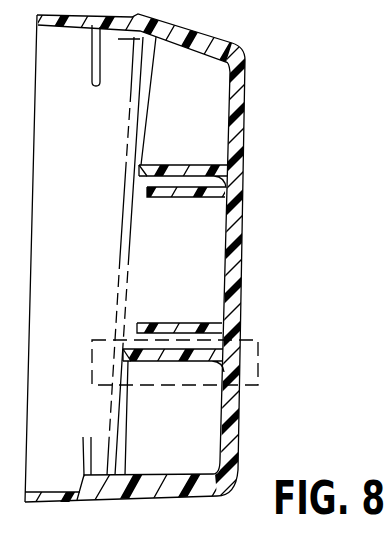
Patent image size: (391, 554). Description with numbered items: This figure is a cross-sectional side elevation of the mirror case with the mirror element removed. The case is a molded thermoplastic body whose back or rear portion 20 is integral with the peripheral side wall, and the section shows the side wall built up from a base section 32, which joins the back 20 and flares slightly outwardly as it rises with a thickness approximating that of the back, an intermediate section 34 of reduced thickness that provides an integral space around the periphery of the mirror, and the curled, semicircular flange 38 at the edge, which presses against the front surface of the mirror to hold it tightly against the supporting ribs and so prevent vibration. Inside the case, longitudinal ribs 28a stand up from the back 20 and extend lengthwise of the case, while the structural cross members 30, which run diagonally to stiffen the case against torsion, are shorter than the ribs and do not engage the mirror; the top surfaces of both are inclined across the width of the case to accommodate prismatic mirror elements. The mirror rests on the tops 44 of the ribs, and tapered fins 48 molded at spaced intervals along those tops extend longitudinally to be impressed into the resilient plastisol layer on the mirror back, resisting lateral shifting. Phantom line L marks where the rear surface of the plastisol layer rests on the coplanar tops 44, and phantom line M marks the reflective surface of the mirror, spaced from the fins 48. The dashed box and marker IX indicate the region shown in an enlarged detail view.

The back or rear portion 20 is at (243, 122).
The structural cross members 30 is at (204, 108).
The longitudinal ribs 28a is at (197, 165).
The tops of supporting ribs 44 is at (139, 166).
The tapered fins 48 is at (138, 168).
The phantom line M is at (123, 233).
The phantom line L is at (133, 247).
The section indicator IX is at (254, 341).
The curled, semicircular flange 38 is at (83, 503).
The intermediate section 34 is at (110, 503).
The base section 32 is at (235, 503).